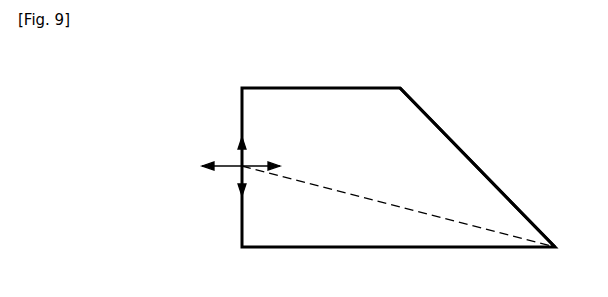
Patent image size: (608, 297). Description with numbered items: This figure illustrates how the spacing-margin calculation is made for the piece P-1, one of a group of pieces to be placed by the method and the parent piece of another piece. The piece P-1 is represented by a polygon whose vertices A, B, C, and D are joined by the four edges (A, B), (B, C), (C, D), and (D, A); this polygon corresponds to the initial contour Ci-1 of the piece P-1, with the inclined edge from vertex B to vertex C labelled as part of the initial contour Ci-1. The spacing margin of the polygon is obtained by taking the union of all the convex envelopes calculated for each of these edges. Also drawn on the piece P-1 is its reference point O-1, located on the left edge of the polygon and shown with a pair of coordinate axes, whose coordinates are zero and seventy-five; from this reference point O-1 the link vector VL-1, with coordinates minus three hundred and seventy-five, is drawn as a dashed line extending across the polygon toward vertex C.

The vertex A is at (236, 75).
The vertex B is at (400, 75).
The vertex C is at (565, 259).
The vertex D is at (233, 259).
The piece P-1 is at (357, 141).
The initial contour Ci-1 is at (464, 142).
The link vector VL-1 is at (398, 206).
The reference point O-1 is at (236, 170).